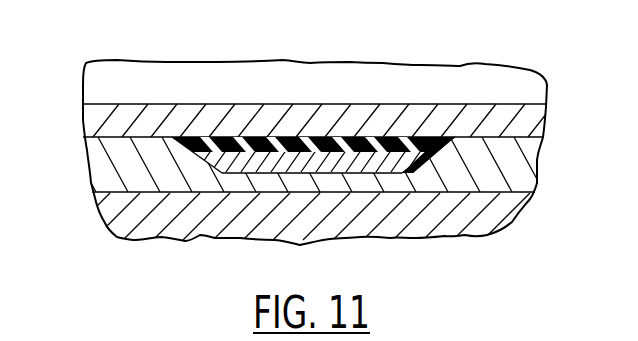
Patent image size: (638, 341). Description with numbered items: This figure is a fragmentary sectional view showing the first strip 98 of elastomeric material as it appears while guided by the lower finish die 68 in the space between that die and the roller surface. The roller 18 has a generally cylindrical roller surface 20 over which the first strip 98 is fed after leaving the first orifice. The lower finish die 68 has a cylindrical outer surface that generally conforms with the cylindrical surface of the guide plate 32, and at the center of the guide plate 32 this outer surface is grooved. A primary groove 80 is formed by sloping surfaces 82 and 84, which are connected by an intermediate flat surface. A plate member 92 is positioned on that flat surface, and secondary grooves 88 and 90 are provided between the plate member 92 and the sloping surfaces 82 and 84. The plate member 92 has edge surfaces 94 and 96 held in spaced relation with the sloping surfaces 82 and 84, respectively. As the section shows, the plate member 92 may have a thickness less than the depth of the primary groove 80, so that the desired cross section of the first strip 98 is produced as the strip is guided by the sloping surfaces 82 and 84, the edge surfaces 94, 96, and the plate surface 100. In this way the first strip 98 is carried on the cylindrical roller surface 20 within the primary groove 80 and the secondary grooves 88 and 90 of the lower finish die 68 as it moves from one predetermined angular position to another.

The roller 18 is at (538, 88).
The cylindrical roller surface 20 is at (92, 148).
The sloping surface 84 is at (193, 150).
The first strip 98 is at (228, 148).
The plate surface 100 is at (293, 142).
The primary groove 80 is at (406, 150).
The sloping surface 82 is at (438, 148).
The lower finish die 68 is at (530, 176).
The secondary groove 90 is at (218, 149).
The edge surface 96 is at (223, 150).
The plate member 92 is at (408, 157).
The edge surface 94 is at (410, 155).
The secondary groove 88 is at (438, 160).
The guide plate 32 is at (490, 228).